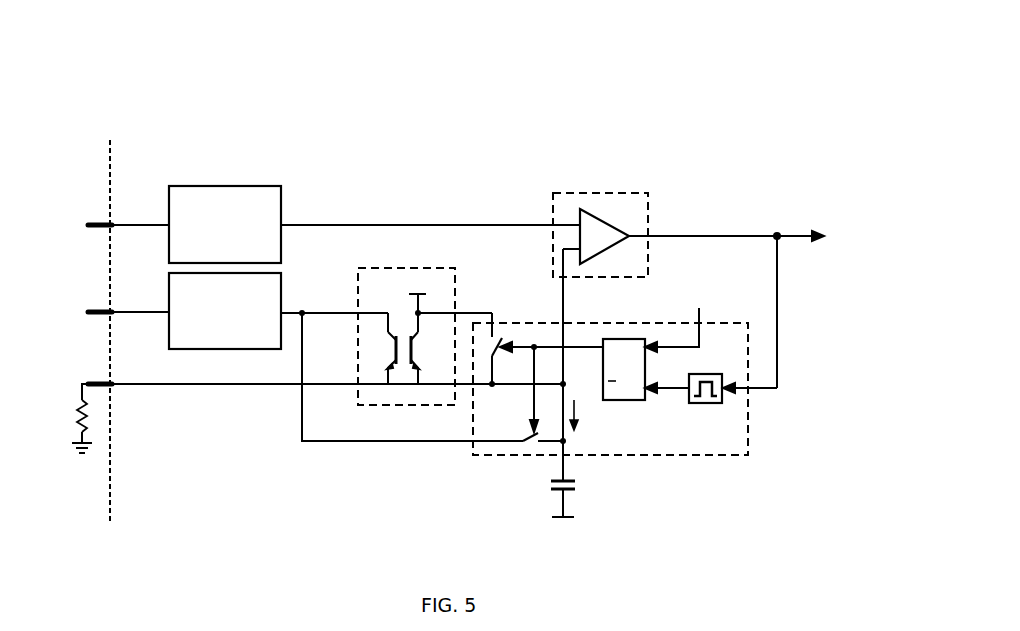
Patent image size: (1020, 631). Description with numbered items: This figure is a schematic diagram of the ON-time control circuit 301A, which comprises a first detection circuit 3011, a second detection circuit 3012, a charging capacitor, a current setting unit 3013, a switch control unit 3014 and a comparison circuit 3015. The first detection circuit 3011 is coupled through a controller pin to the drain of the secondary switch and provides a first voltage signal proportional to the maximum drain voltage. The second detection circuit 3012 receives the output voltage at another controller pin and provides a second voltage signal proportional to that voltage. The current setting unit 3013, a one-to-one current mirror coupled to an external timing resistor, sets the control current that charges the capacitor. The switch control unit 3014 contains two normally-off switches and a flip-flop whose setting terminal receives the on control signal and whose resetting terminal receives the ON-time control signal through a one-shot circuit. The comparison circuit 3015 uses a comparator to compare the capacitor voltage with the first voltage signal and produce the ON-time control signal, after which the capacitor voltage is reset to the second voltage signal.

The ON-time control circuit 301A is at (493, 70).
The first detection circuit 3011 is at (169, 251).
The second detection circuit 3012 is at (179, 350).
The current setting unit 3013 is at (366, 405).
The switch control unit 3014 is at (498, 455).
The comparison circuit 3015 is at (553, 278).